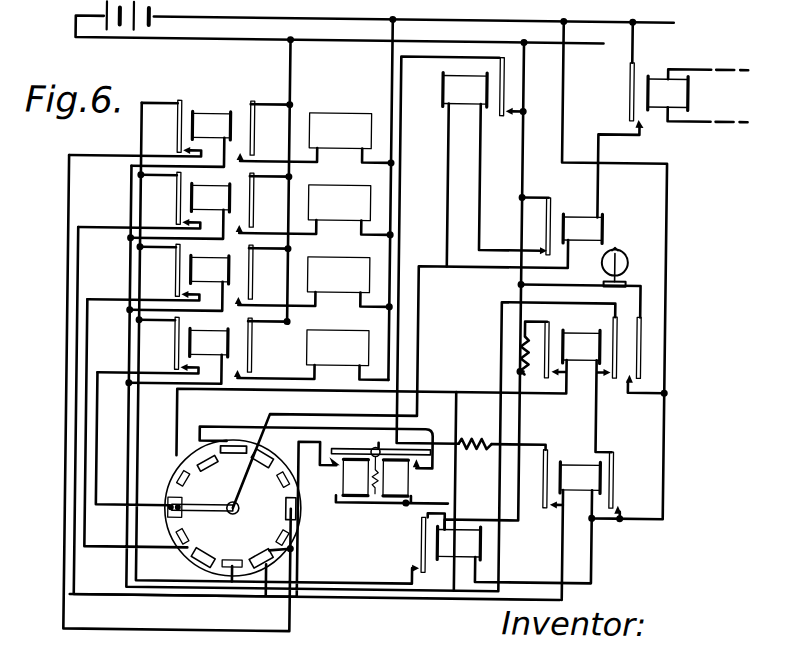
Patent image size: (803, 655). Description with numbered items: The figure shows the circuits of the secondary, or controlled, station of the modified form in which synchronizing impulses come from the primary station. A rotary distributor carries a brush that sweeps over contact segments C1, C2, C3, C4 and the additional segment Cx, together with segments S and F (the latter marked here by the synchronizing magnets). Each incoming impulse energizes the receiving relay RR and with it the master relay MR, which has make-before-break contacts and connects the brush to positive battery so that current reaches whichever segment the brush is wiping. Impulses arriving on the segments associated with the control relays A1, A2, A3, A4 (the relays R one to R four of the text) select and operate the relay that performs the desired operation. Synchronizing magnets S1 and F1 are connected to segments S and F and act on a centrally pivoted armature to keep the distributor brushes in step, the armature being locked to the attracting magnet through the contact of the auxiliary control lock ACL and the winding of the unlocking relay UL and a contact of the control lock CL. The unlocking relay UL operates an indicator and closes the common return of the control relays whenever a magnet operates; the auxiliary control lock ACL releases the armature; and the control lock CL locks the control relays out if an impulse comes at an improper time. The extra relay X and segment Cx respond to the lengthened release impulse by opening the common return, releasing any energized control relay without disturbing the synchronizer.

The control relay A1 is at (190, 132).
The control relay A2 is at (190, 204).
The control relay A3 is at (190, 276).
The control relay A4 is at (190, 349).
The auxiliary control lock ACL is at (474, 252).
The receiving relay RR is at (672, 120).
The master relay MR is at (418, 353).
The unlocking relay UL is at (396, 386).
The control lock CL is at (582, 484).
The extra relay X is at (502, 548).
The synchronizing magnet S1 is at (345, 478).
The synchronizing magnet F1 is at (410, 478).
The contact segment S is at (232, 452).
The contact segment Cx is at (260, 476).
The contact segment C1 is at (300, 514).
The contact segment C2 is at (272, 557).
The contact segment C3 is at (204, 562).
The contact segment C4 is at (184, 522).